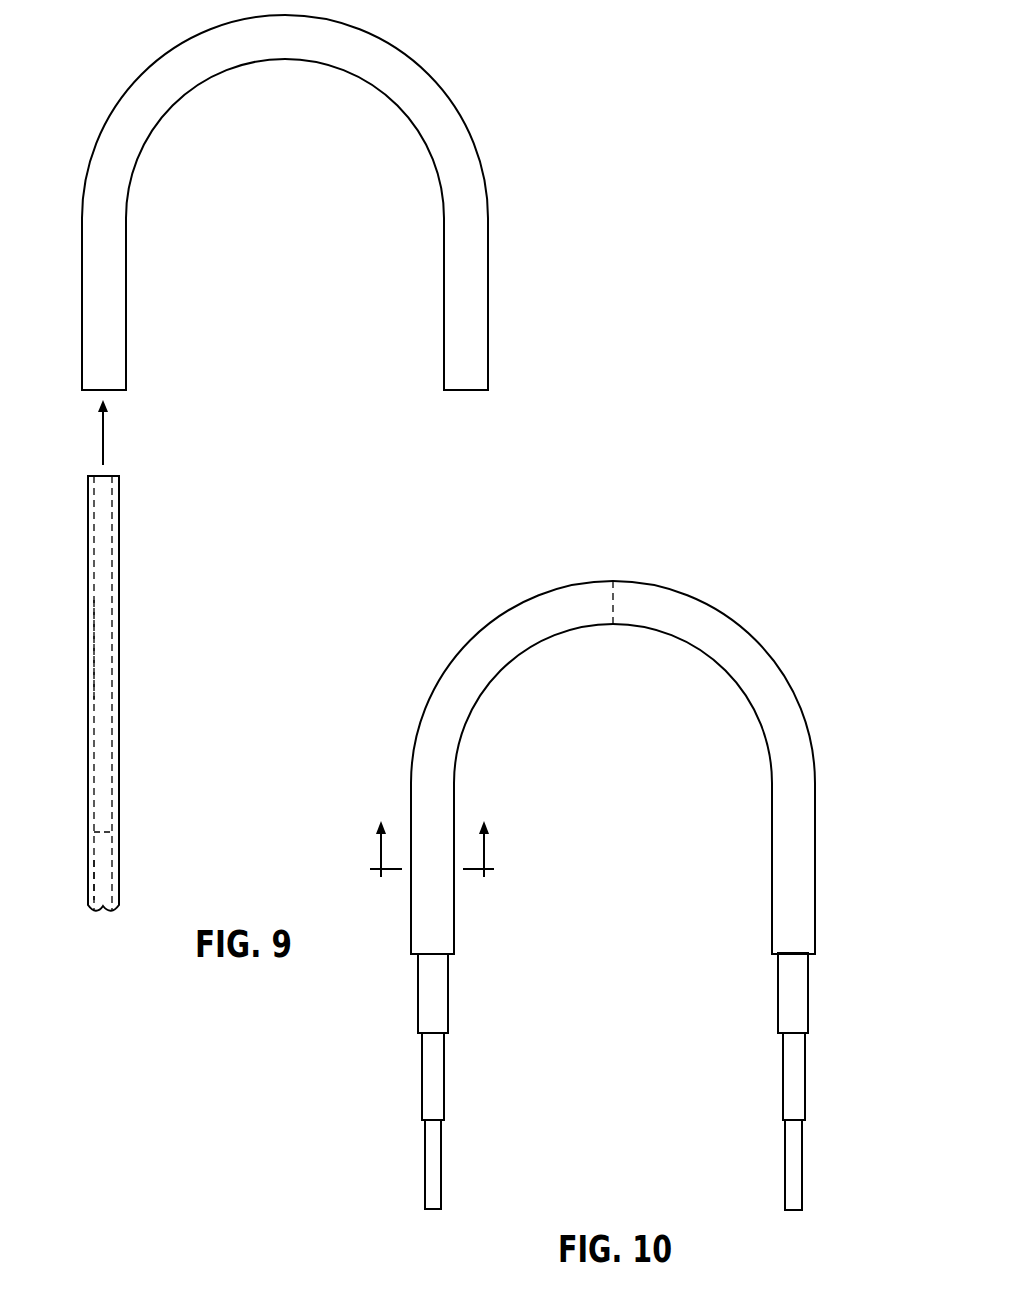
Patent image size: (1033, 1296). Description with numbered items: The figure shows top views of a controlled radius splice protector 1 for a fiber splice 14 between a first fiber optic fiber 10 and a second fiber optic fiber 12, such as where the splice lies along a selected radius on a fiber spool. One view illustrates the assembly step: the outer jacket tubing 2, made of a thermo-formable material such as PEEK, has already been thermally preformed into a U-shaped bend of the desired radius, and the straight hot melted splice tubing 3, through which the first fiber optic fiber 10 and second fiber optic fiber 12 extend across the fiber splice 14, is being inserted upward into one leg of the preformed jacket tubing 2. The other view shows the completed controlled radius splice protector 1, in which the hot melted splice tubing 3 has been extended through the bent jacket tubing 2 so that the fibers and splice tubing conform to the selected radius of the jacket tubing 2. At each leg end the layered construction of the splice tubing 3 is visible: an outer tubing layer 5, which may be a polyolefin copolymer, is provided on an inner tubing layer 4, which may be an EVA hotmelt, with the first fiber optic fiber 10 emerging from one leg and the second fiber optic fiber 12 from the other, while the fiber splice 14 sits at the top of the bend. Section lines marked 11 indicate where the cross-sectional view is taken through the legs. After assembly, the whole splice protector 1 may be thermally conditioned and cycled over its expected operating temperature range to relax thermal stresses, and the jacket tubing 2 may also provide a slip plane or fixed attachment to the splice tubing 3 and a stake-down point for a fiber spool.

In FIG. 10, the controlled radius splice protector 1 is at (601, 868).
In FIG. 9, the outer jacket tubing 2 is at (128, 112).
In FIG. 10, the outer jacket tubing 2 is at (768, 688).
In FIG. 9, the hot melted splice tubing 3 is at (82, 551).
In FIG. 10, the hot melted splice tubing 3 is at (818, 993).
In FIG. 10, the inner tubing layer 4 is at (435, 1082).
In FIG. 10, the outer tubing layer 5 is at (430, 993).
In FIG. 9, the first fiber optic fiber 10 is at (103, 872).
In FIG. 10, the first fiber optic fiber 10 is at (432, 1168).
In FIG. 10, the section line 11- 11 is at (439, 870).
In FIG. 9, the second fiber optic fiber 12 is at (103, 650).
In FIG. 10, the second fiber optic fiber 12 is at (792, 1168).
In FIG. 9, the fiber splice 14 is at (100, 826).
In FIG. 10, the fiber splice 14 is at (605, 596).